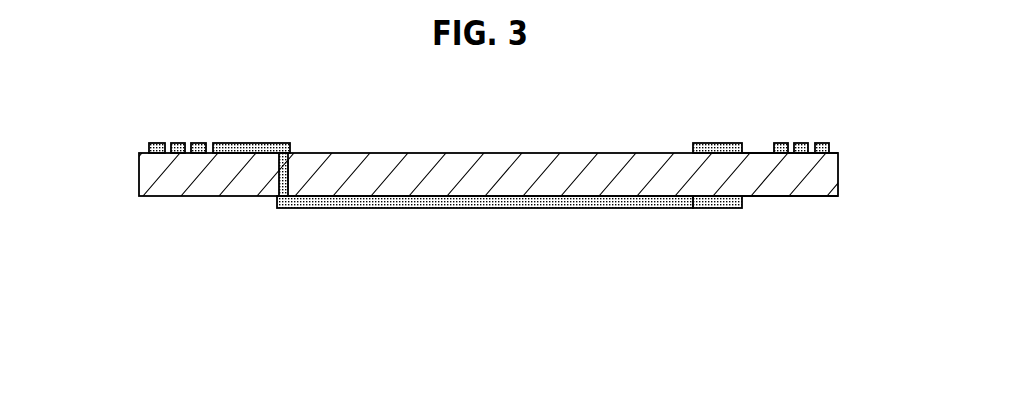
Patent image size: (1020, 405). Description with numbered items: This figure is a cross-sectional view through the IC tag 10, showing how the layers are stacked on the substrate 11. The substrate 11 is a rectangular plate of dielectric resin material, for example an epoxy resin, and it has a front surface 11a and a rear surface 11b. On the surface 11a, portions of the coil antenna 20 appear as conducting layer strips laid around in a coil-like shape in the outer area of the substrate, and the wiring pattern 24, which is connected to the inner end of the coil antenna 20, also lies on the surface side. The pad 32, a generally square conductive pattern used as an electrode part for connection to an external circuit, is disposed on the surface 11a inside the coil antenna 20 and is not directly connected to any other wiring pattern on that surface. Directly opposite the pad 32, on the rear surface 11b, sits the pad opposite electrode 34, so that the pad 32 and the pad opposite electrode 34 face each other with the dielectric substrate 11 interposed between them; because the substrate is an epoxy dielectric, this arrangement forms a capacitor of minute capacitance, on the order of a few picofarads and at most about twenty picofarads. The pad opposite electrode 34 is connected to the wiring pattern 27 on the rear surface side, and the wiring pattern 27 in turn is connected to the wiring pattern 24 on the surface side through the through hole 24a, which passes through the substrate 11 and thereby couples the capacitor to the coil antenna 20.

The IC tag 10 is at (770, 203).
The substrate 11 is at (840, 168).
The surface 11a is at (835, 152).
The rear surface 11b is at (822, 200).
The coil antenna 20 is at (233, 138).
The wiring pattern 24 is at (287, 152).
The through hole 24a is at (289, 177).
The wiring pattern 27 is at (382, 208).
The pad 32 is at (712, 150).
The pad opposite electrode 34 is at (710, 208).